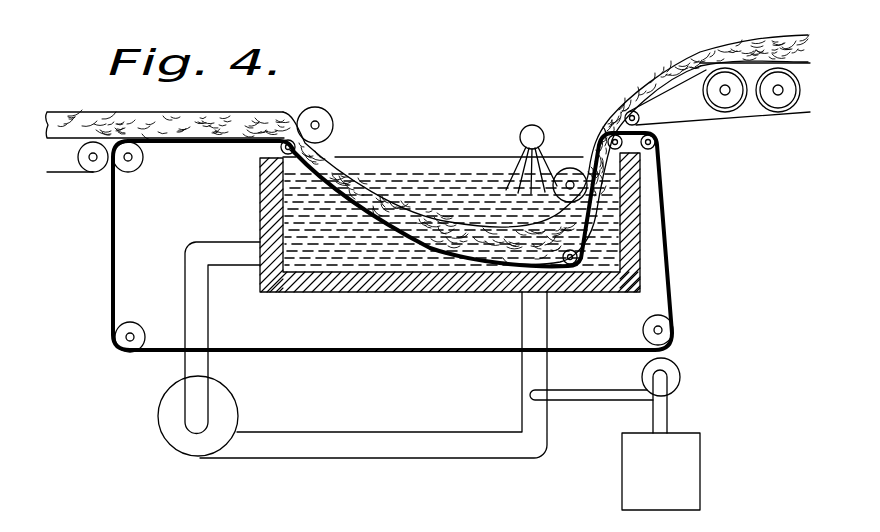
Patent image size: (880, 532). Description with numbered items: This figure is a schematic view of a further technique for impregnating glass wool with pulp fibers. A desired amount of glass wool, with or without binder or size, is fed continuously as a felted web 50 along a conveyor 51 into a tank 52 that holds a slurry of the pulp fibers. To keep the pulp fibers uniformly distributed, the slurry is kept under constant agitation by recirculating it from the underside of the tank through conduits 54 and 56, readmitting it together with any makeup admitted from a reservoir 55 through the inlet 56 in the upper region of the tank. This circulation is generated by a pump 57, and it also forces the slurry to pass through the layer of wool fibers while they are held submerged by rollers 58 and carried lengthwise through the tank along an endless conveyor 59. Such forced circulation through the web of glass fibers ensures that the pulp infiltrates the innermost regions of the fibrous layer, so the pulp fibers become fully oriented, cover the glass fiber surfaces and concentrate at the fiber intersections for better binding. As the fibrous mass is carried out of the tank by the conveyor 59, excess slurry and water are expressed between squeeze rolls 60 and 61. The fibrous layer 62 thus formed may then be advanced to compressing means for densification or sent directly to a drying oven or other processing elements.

The felted web 50 is at (640, 80).
The conveyor 51 is at (687, 124).
The tank 52 is at (413, 295).
The conduit 54 is at (232, 206).
The reservoir 55 is at (693, 448).
The inlet 56 is at (527, 124).
The pump 57 is at (228, 407).
The rollers 58 is at (563, 168).
The endless conveyor 59 is at (348, 320).
The squeeze roll 60 is at (330, 118).
The squeeze roll 61 is at (286, 120).
The fibrous layer 62 is at (187, 115).